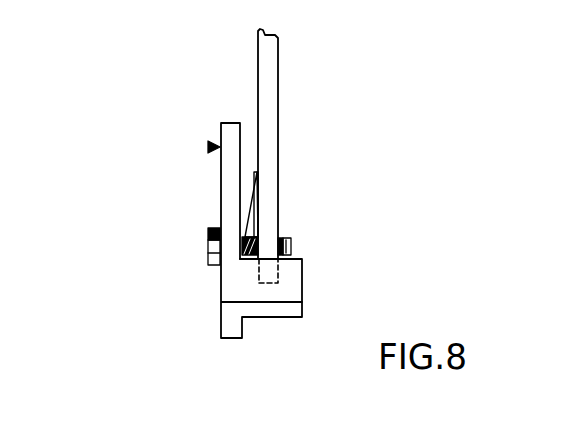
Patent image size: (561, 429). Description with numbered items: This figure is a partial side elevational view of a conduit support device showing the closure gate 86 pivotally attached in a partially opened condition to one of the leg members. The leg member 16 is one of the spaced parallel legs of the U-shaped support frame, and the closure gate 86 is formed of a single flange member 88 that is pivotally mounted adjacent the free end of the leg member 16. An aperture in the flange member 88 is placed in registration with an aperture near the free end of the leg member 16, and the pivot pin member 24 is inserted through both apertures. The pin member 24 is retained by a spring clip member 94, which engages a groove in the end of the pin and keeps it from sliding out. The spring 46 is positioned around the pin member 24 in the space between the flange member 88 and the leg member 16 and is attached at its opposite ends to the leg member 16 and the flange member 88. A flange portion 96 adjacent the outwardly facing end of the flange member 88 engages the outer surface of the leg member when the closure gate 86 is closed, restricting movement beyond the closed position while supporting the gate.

The leg member 16 is at (270, 63).
The pivot pin member 24 is at (208, 248).
The spring 46 is at (248, 238).
The closure gate 86 is at (210, 147).
The flange member 88 is at (227, 176).
The spring clip member 94 is at (290, 228).
The flange portion 96 is at (298, 288).